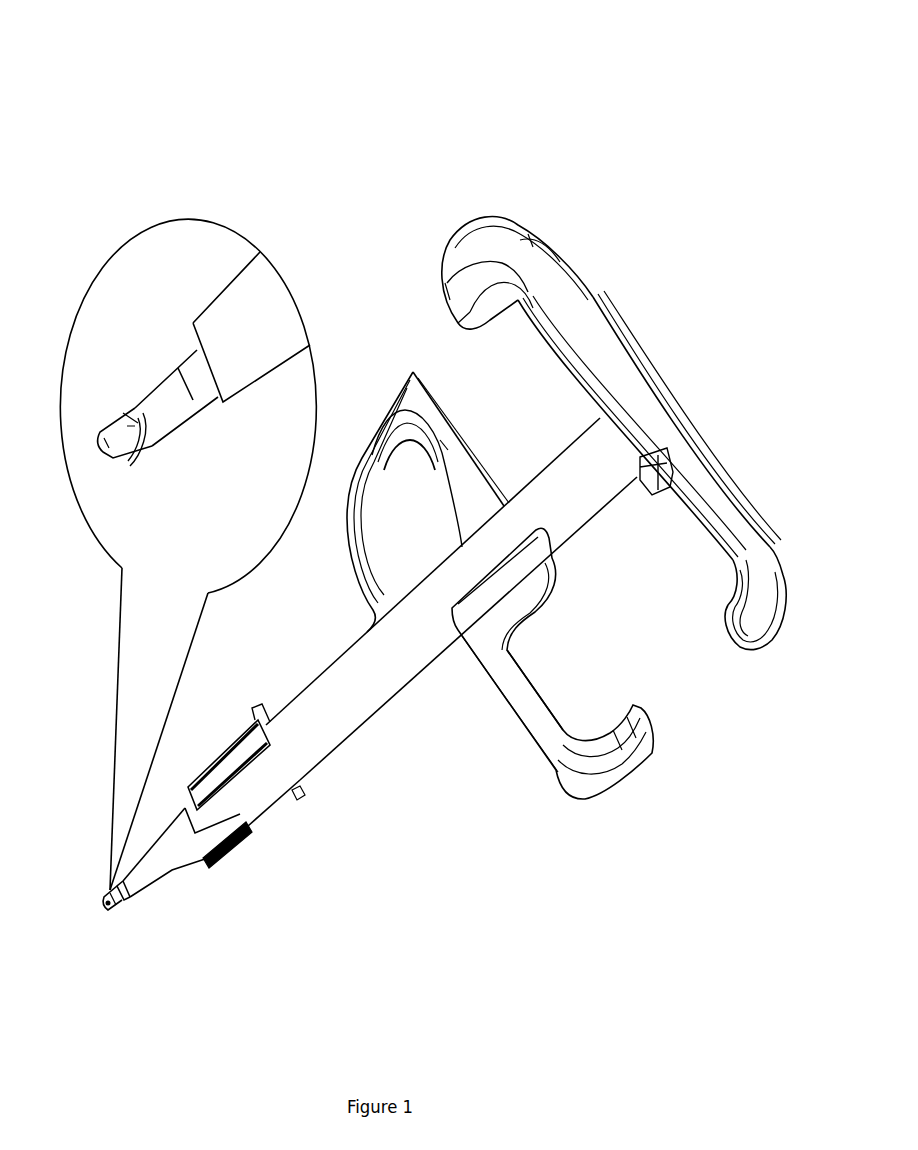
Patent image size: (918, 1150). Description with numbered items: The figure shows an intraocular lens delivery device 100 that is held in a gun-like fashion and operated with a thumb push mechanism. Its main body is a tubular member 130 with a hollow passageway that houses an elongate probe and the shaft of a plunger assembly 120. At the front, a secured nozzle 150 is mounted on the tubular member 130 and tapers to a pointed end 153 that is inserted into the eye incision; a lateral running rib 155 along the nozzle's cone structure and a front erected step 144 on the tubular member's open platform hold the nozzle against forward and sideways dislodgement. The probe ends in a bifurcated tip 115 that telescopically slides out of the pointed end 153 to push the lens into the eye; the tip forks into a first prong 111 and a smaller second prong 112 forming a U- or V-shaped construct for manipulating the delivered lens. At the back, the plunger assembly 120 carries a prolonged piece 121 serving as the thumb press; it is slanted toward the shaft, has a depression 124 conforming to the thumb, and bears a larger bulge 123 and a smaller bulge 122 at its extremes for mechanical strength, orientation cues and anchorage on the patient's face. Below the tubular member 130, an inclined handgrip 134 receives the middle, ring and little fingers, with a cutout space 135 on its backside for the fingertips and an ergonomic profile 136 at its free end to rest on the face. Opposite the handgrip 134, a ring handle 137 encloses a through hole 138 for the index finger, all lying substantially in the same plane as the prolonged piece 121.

The device 100 is at (158, 83).
The first prong 111 is at (100, 433).
The second prong 112 is at (133, 468).
The bifurcated tip 115 is at (118, 912).
The plunger assembly 120 is at (647, 256).
The prolonged piece 121 is at (640, 425).
The bulge 122 is at (763, 607).
The bulge 123 is at (468, 270).
The depression 124 is at (555, 272).
The tubular member 130 is at (377, 760).
The handgrip 134 is at (487, 618).
The cutout space 135 is at (556, 660).
The ergonomic profile 136 is at (597, 748).
The ring handle 137 is at (450, 460).
The through hole 138 is at (395, 510).
The front erected step 144 is at (230, 852).
The secured nozzle 150 is at (166, 900).
The pointed end 153 is at (208, 333).
The lateral running rib 155 is at (243, 747).